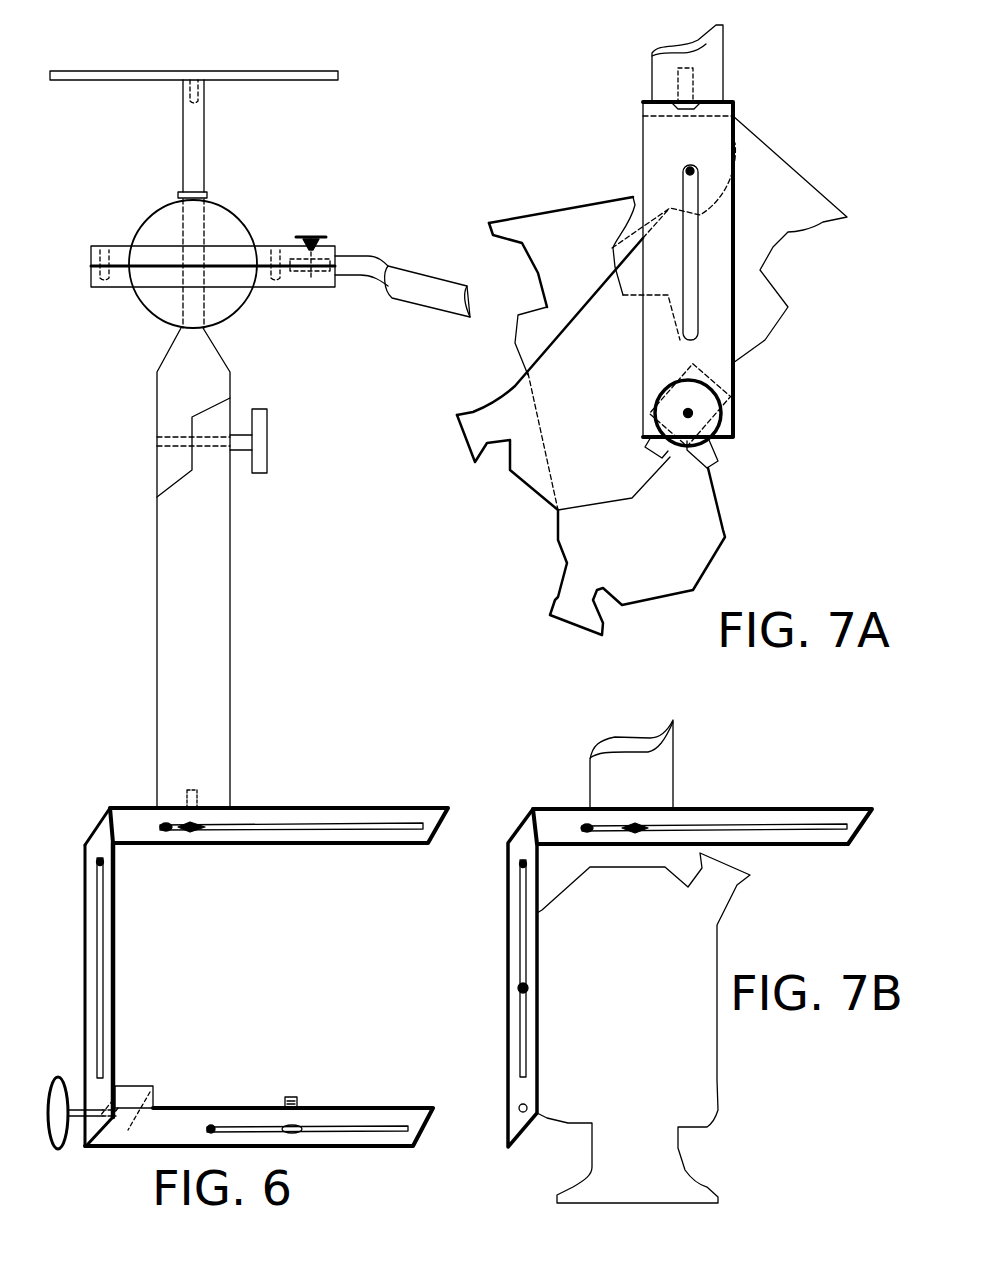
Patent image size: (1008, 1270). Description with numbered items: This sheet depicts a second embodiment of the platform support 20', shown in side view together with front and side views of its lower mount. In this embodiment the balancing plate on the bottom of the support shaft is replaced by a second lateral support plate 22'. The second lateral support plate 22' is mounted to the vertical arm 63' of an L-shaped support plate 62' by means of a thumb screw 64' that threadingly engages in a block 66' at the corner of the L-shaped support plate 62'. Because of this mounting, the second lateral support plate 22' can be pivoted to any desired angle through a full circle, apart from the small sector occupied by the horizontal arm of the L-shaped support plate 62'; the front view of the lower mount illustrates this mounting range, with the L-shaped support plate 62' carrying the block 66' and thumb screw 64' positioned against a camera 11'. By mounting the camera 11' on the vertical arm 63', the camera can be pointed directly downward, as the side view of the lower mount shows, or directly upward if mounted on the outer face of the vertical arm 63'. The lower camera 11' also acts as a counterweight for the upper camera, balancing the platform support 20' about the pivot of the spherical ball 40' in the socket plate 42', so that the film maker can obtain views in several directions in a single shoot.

In FIG. 6, the platform support 20' is at (220, 439).
In FIG. 6, the spherical ball 40' is at (213, 258).
In FIG. 6, the socket plate 42' is at (402, 260).
In FIG. 6, the L-shaped support plate 62' is at (266, 854).
In FIG. 6, the vertical arm 63' is at (141, 994).
In FIG. 7A, the vertical arm 63' is at (736, 252).
In FIG. 7B, the vertical arm 63' is at (659, 978).
In FIG. 6, the thumb screw 64' is at (76, 1079).
In FIG. 7A, the thumb screw 64' is at (737, 426).
In FIG. 6, the block 66' is at (148, 1085).
In FIG. 7A, the block 66' is at (747, 413).
In FIG. 6, the second lateral support plate 22' is at (259, 1095).
In FIG. 7A, the camera 11' is at (664, 330).
In FIG. 7B, the camera 11' is at (674, 961).